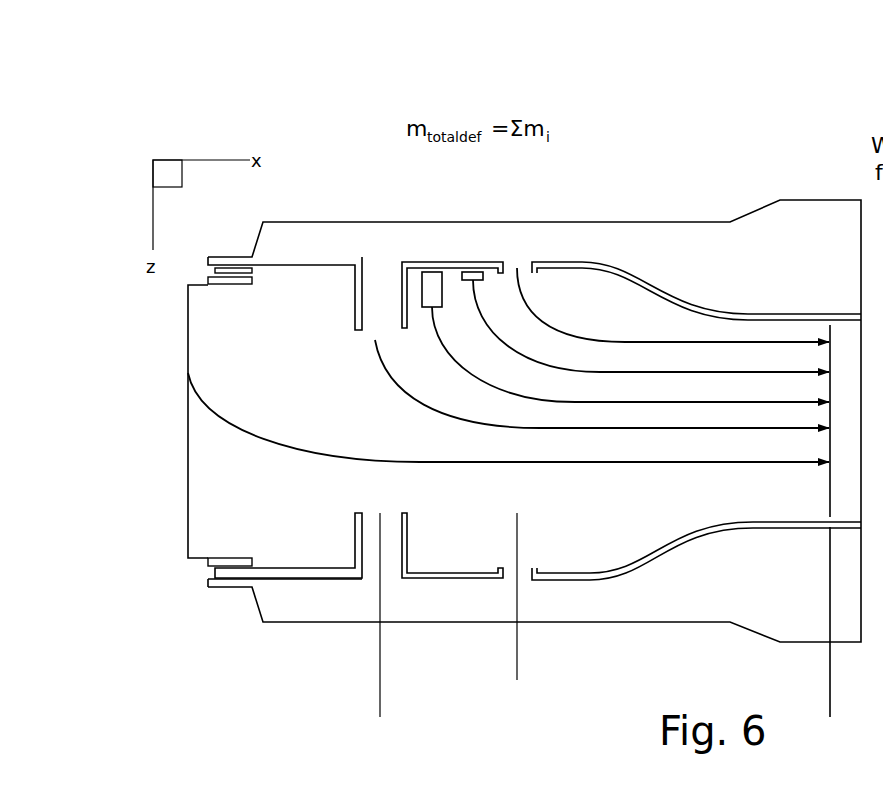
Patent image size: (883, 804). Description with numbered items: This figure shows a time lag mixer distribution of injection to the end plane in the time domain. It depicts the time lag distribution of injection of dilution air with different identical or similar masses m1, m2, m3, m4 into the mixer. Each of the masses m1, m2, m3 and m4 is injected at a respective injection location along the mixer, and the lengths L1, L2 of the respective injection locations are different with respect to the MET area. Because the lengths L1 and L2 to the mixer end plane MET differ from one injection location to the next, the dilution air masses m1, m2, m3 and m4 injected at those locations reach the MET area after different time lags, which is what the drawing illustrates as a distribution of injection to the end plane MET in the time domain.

The dilution air mass m1 is at (382, 297).
The dilution air mass m2 is at (432, 288).
The dilution air mass m3 is at (473, 268).
The dilution air mass m4 is at (517, 268).
The mixer end plane MET is at (830, 333).
The length of injection location L1 is at (829, 661).
The length of injection location L2 is at (829, 697).